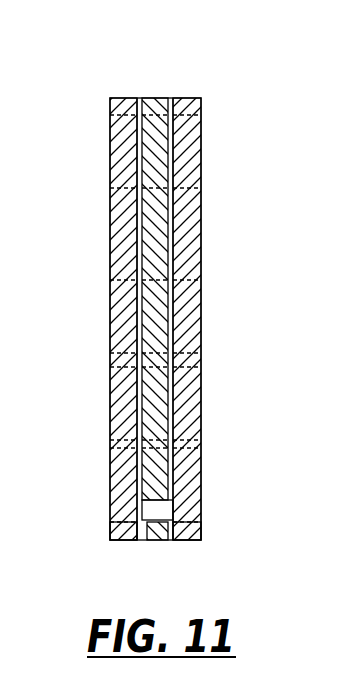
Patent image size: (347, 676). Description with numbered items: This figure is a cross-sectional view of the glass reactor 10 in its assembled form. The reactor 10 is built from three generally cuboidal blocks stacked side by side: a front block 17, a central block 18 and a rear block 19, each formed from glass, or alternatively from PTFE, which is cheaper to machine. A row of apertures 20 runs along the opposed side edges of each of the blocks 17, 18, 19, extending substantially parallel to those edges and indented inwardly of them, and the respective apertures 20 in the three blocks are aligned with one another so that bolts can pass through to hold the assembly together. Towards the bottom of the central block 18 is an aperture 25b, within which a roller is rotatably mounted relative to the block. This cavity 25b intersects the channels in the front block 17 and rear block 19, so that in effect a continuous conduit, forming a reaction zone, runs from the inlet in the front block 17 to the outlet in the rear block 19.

The reactor 10 is at (243, 73).
The central block 18 is at (151, 97).
The apertures 20 is at (203, 116).
The aperture 25b is at (141, 508).
The front block 17 is at (130, 541).
The rear block 19 is at (185, 541).